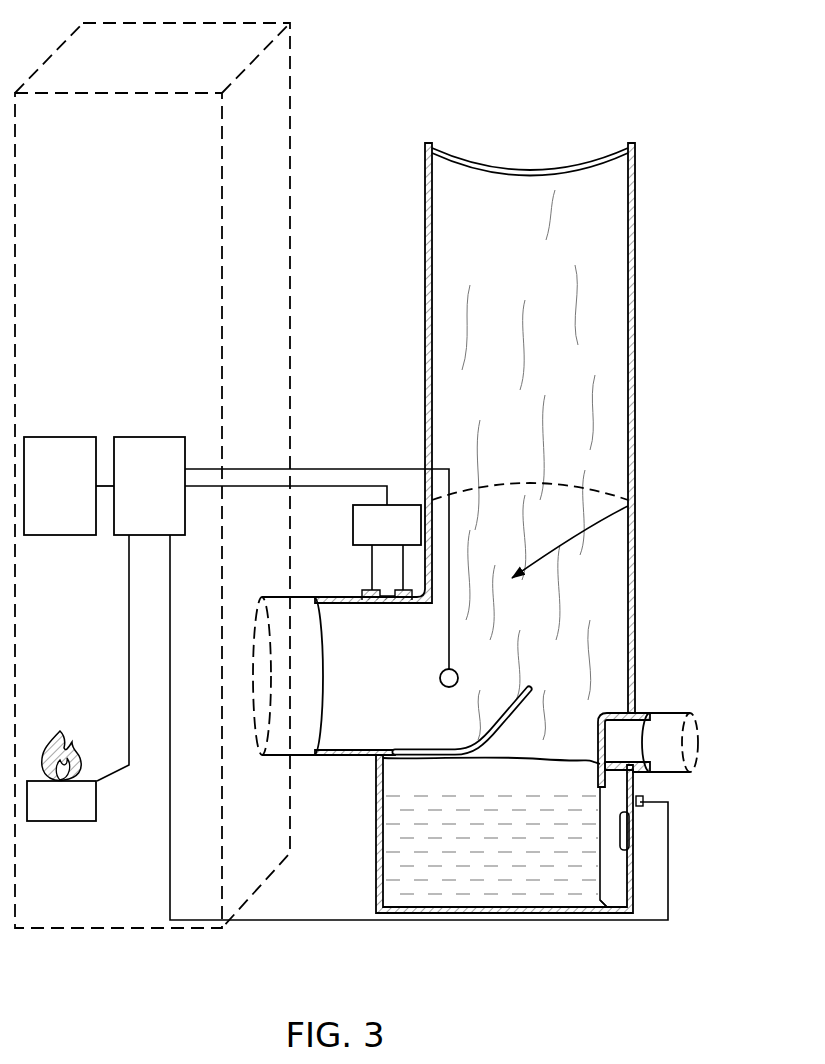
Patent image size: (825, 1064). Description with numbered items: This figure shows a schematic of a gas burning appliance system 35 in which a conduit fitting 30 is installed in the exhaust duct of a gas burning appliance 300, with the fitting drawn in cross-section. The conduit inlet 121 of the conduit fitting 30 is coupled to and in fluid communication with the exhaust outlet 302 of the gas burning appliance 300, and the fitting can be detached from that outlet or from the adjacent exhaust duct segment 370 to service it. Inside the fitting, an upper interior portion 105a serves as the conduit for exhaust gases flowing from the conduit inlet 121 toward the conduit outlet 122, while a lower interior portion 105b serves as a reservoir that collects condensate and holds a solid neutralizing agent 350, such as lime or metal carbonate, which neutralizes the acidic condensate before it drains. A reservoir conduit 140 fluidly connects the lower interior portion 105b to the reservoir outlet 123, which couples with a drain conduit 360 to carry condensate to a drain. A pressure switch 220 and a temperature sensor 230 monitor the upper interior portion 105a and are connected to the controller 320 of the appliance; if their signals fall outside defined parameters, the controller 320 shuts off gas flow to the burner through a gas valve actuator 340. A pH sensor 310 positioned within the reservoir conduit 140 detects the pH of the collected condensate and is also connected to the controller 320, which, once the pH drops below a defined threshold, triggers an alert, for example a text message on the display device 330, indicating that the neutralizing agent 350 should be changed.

The conduit fitting 30 is at (395, 150).
The gas burning appliance system 35 is at (624, 71).
The upper interior portion 105a is at (632, 505).
The lower interior portion 105b is at (575, 771).
The conduit inlet 121 is at (333, 628).
The conduit outlet 122 is at (485, 483).
The reservoir outlet 123 is at (642, 712).
The reservoir conduit 140 is at (615, 895).
The pressure switch 220 is at (369, 539).
The temperature sensor 230 is at (443, 685).
The gas burning appliance 300 is at (100, 365).
The exhaust outlet 302 is at (300, 757).
The pH sensor 310 is at (633, 833).
The controller 320 is at (132, 500).
The display device 330 is at (42, 500).
The gas valve actuator 340 is at (43, 815).
The neutralizing agent 350 is at (520, 893).
The drain conduit 360 is at (680, 712).
The exhaust duct segment 370 is at (425, 170).